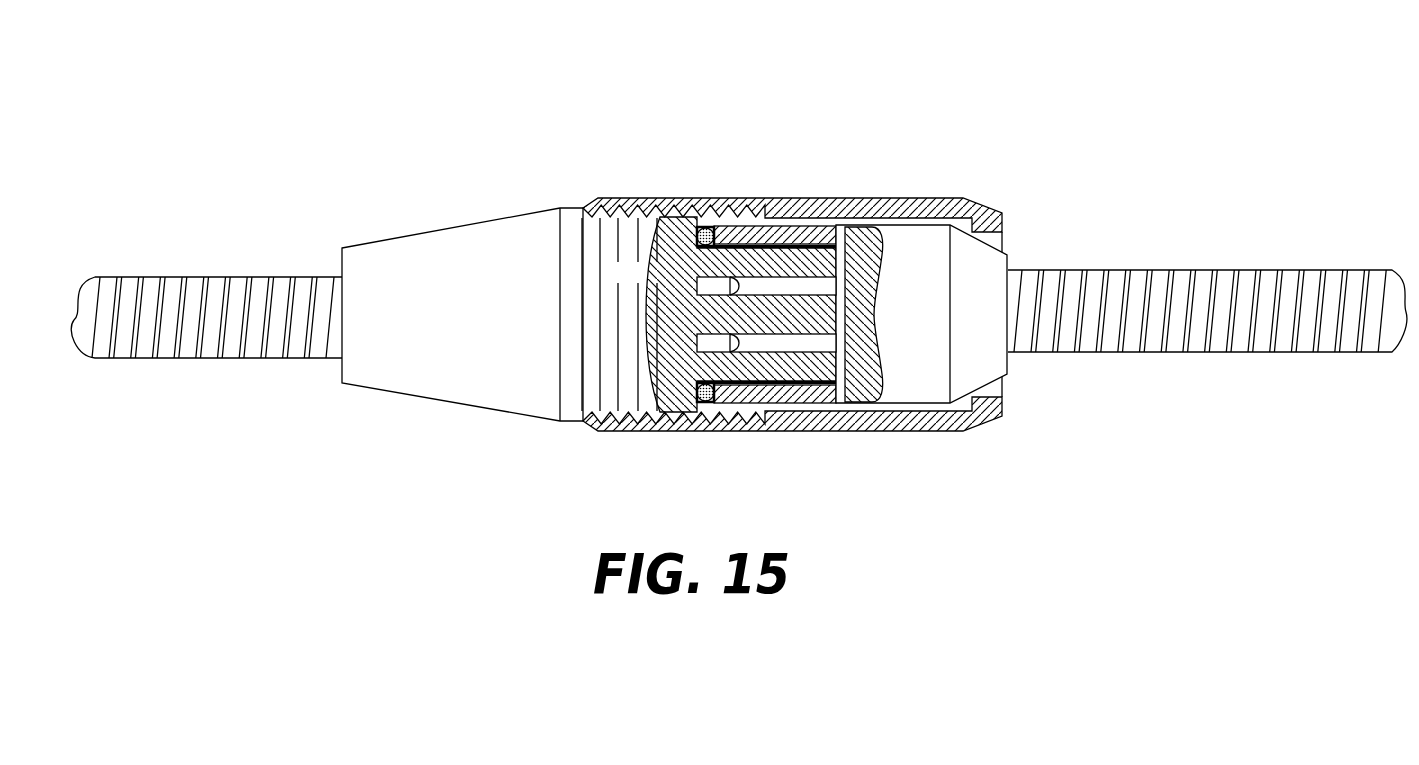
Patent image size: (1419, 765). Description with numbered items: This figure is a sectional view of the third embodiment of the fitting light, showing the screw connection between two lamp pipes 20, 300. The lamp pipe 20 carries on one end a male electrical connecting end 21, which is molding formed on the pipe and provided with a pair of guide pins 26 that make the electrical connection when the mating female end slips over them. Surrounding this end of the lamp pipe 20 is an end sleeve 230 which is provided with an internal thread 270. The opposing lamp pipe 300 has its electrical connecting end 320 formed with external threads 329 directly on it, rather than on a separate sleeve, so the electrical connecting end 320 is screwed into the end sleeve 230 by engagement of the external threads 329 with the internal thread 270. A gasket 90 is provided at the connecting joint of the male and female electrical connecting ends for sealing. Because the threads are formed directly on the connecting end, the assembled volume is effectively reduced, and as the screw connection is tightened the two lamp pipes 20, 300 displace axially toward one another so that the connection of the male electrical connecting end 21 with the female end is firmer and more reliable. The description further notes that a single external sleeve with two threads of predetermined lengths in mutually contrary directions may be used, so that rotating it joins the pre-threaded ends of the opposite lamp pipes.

The lamp pipe 300 is at (223, 303).
The electrical connecting end 320 is at (473, 263).
The external threads 329 is at (617, 207).
The gasket 90 is at (667, 205).
The internal thread 270 is at (707, 207).
The male electrical connecting end 21 is at (849, 228).
The lamp pipe 20 is at (1137, 297).
The guide pins 26 is at (715, 343).
The end sleeve 230 is at (900, 432).